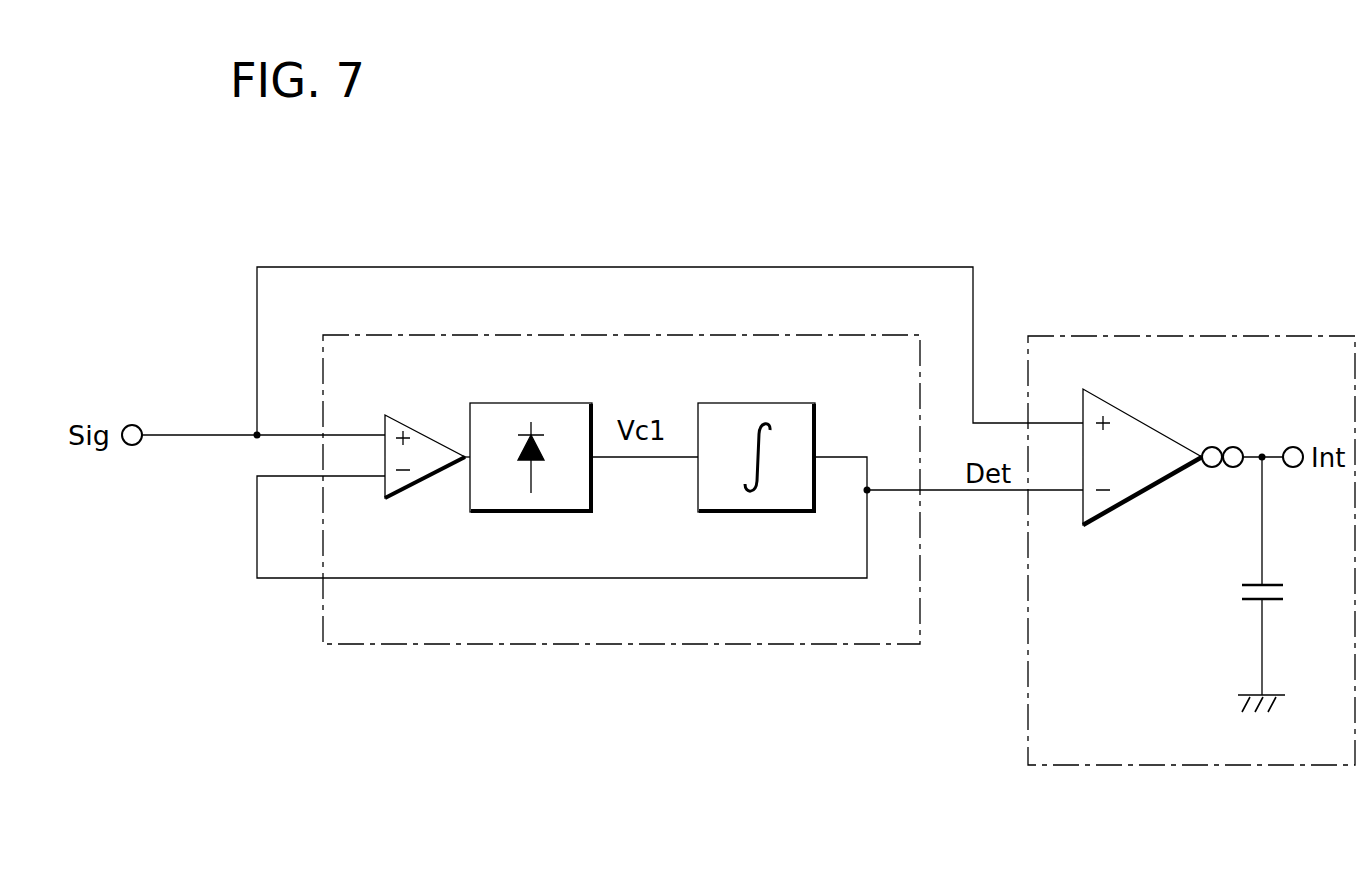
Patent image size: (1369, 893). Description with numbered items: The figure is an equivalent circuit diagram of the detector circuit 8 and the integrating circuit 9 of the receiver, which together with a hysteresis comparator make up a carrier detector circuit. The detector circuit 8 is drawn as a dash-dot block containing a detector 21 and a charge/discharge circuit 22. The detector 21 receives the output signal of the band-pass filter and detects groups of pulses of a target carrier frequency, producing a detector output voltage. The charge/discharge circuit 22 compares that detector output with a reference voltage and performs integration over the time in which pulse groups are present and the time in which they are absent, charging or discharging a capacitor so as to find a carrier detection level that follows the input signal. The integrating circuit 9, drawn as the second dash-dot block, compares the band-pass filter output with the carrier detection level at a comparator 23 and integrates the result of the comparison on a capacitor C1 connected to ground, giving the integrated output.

The detector circuit 8 is at (549, 644).
The integrating circuit 9 is at (1183, 765).
The detector 21 is at (597, 401).
The charge/discharge circuit 22 is at (757, 403).
The comparator 23 is at (1142, 500).
The capacitor C1 is at (1250, 600).